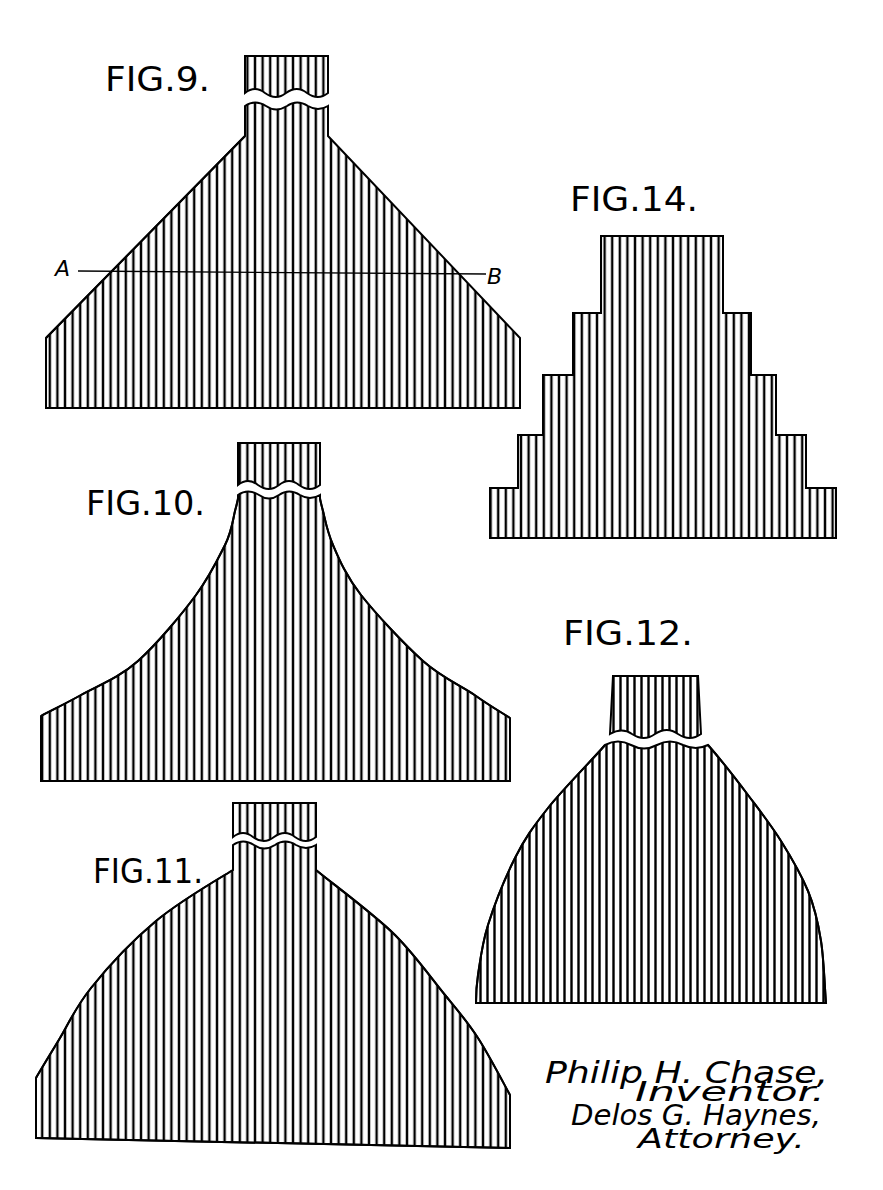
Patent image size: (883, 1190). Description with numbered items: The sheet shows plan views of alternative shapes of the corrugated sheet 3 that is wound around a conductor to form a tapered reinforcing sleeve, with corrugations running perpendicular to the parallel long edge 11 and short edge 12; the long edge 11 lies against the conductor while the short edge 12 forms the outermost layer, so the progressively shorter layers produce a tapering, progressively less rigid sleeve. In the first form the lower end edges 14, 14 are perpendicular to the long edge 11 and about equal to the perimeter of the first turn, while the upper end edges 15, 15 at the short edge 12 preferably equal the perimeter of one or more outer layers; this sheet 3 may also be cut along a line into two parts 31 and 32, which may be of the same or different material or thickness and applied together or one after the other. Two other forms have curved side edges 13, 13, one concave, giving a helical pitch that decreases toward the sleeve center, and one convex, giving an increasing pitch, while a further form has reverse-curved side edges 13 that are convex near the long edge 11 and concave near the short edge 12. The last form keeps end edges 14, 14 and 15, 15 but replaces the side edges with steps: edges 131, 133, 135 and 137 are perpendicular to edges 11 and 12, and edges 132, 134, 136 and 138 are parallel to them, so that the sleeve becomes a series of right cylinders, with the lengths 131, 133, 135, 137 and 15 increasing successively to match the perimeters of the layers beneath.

In FIG. 9, the corrugated sheet 3 is at (190, 173).
In FIG. 14, the corrugated sheet 3 is at (562, 328).
In FIG. 10, the corrugated sheet 3 is at (195, 612).
In FIG. 11, the corrugated sheet 3 is at (152, 948).
In FIG. 12, the corrugated sheet 3 is at (540, 843).
In FIG. 9, the long edge 11 is at (327, 401).
In FIG. 14, the long edge 11 is at (575, 530).
In FIG. 10, the long edge 11 is at (367, 774).
In FIG. 11, the long edge 11 is at (480, 1133).
In FIG. 12, the long edge 11 is at (627, 996).
In FIG. 9, the short edge 12 is at (276, 48).
In FIG. 14, the short edge 12 is at (690, 229).
In FIG. 10, the short edge 12 is at (232, 437).
In FIG. 11, the short edge 12 is at (232, 794).
In FIG. 12, the short edge 12 is at (665, 669).
In FIG. 10, the side edge 13 is at (143, 633).
In FIG. 11, the side edge 13 is at (92, 980).
In FIG. 12, the side edge 13 is at (532, 820).
In FIG. 9, the end edge 14 is at (38, 373).
In FIG. 14, the end edge 14 is at (482, 500).
In FIG. 10, the end edge 14 is at (504, 740).
In FIG. 11, the end edge 14 is at (38, 1092).
In FIG. 9, the end edge 15 is at (235, 72).
In FIG. 14, the end edge 15 is at (593, 260).
In FIG. 9, the sheet part 31 is at (147, 238).
In FIG. 9, the sheet part 32 is at (97, 302).
In FIG. 14, the stepped edge 131 is at (510, 461).
In FIG. 14, the stepped edge 132 is at (495, 481).
In FIG. 14, the stepped edge 133 is at (535, 400).
In FIG. 14, the stepped edge 134 is at (524, 427).
In FIG. 14, the stepped edge 135 is at (563, 312).
In FIG. 14, the stepped edge 136 is at (549, 366).
In FIG. 14, the stepped edge 137 is at (593, 270).
In FIG. 14, the stepped edge 138 is at (588, 300).